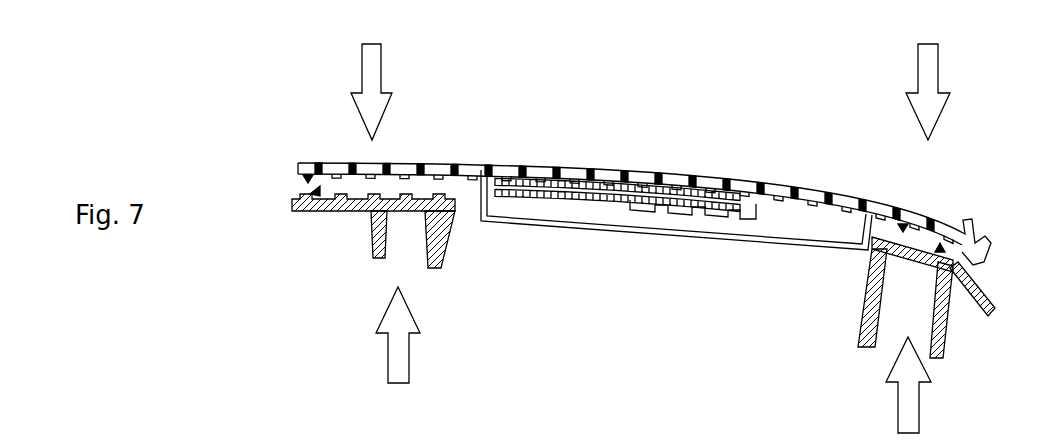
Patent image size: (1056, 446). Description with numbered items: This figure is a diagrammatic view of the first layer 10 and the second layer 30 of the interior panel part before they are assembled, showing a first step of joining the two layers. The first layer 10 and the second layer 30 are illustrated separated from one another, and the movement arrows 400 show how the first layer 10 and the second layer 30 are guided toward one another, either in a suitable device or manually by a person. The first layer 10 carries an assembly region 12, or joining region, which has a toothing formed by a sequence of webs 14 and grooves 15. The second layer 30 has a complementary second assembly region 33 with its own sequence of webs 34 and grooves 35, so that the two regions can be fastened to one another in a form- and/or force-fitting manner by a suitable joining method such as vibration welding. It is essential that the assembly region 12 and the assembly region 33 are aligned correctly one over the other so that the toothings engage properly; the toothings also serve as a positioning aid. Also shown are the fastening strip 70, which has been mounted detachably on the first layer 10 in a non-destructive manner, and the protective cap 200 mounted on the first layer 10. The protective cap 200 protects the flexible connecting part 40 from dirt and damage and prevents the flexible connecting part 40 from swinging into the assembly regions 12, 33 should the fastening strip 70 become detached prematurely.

The movement arrows 400 is at (370, 62).
The first layer 10 is at (800, 175).
The assembly region 12 is at (308, 176).
The webs 14 is at (407, 165).
The grooves 15 is at (434, 165).
The second assembly region 33 is at (310, 190).
The second layer 30 is at (635, 276).
The webs 34 is at (328, 218).
The grooves 35 is at (350, 218).
The flexible connecting part 40 is at (548, 196).
The protective cap 200 is at (565, 222).
The fastening strip 70 is at (690, 217).